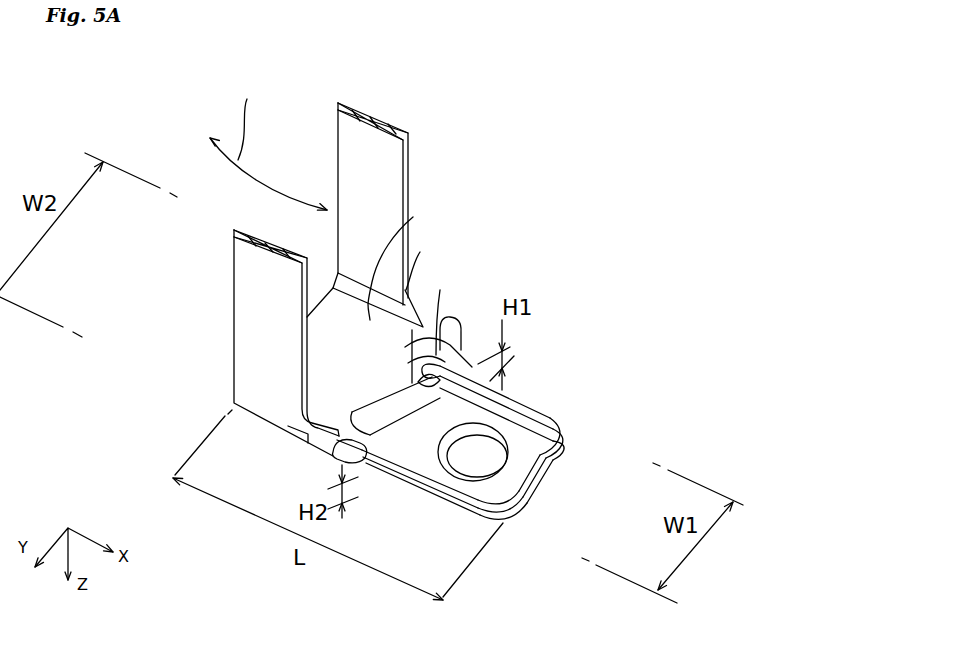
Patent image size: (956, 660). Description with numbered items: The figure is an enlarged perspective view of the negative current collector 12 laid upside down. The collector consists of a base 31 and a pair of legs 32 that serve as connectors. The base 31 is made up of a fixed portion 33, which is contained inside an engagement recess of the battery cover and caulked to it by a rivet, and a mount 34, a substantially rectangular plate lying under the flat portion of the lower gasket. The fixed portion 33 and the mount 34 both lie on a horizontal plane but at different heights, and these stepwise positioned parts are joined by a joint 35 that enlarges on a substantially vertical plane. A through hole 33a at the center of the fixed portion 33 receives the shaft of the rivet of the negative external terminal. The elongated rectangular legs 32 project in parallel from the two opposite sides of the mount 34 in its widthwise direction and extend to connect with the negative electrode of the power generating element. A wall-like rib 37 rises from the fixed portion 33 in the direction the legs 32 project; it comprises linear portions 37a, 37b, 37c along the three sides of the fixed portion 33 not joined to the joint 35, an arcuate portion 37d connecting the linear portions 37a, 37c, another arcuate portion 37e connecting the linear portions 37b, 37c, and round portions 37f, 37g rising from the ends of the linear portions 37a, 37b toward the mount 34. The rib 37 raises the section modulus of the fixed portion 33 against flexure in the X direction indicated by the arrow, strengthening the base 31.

The negative current collector 12 is at (430, 143).
The legs 32 is at (238, 279).
The base 31 is at (528, 143).
The mount 34 is at (413, 217).
The joint 35 is at (420, 252).
The fixed portion 33 is at (440, 290).
The through hole 33a is at (488, 440).
The rib 37 is at (558, 422).
The linear portion 37a is at (510, 392).
The linear portion 37b is at (437, 490).
The linear portion 37c is at (548, 472).
The arcuate portion 37d is at (557, 427).
The arcuate portion 37e is at (517, 508).
The round portion 37f is at (447, 318).
The round portion 37g is at (328, 452).